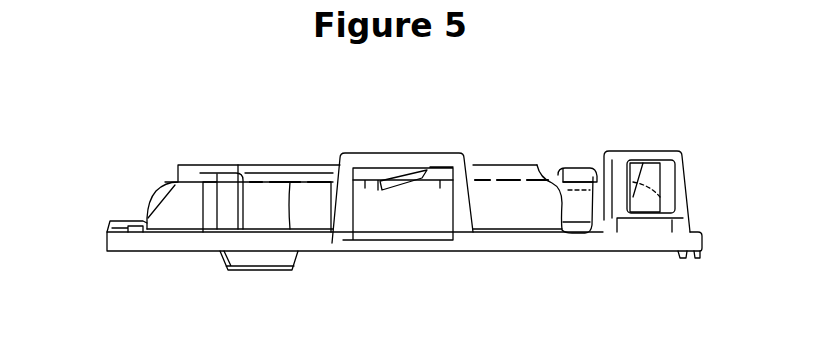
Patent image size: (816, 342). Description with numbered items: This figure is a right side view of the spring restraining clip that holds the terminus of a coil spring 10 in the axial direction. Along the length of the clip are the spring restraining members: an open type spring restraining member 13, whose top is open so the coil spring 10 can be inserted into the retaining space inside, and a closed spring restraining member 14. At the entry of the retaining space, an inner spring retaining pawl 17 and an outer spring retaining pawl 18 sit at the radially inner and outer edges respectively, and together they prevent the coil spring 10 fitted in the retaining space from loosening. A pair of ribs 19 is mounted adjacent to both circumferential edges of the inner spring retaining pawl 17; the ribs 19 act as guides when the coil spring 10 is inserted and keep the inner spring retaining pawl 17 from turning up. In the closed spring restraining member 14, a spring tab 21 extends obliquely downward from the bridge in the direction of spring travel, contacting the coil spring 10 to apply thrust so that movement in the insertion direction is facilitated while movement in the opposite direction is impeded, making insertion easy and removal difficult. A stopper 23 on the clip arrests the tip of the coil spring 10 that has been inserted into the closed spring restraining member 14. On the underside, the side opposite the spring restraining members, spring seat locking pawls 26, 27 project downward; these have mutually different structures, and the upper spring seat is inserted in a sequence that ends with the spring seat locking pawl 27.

The coil spring 10 is at (150, 192).
The open type spring restraining member 13 is at (643, 148).
The closed spring restraining member 14 is at (433, 143).
The inner spring retaining pawl 17 is at (571, 167).
The outer spring retaining pawl 18 is at (633, 199).
The ribs 19 is at (540, 165).
The spring tab 21 is at (394, 181).
The stopper 23 is at (180, 212).
The spring seat locking pawl 26 is at (690, 260).
The spring seat locking pawl 27 is at (268, 272).